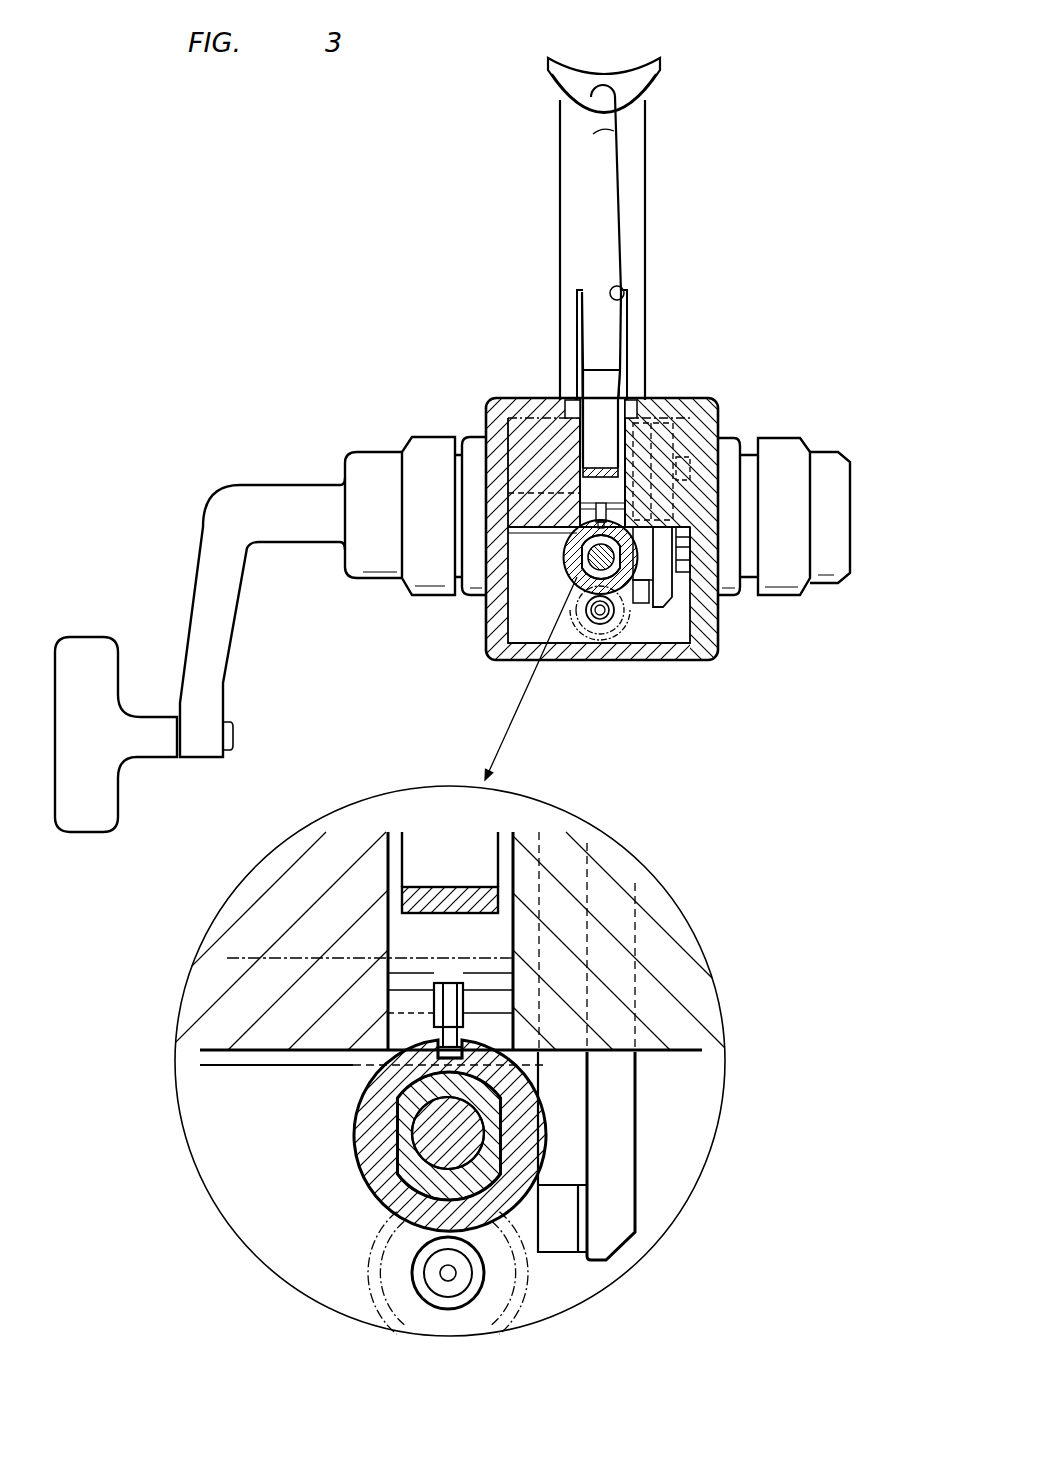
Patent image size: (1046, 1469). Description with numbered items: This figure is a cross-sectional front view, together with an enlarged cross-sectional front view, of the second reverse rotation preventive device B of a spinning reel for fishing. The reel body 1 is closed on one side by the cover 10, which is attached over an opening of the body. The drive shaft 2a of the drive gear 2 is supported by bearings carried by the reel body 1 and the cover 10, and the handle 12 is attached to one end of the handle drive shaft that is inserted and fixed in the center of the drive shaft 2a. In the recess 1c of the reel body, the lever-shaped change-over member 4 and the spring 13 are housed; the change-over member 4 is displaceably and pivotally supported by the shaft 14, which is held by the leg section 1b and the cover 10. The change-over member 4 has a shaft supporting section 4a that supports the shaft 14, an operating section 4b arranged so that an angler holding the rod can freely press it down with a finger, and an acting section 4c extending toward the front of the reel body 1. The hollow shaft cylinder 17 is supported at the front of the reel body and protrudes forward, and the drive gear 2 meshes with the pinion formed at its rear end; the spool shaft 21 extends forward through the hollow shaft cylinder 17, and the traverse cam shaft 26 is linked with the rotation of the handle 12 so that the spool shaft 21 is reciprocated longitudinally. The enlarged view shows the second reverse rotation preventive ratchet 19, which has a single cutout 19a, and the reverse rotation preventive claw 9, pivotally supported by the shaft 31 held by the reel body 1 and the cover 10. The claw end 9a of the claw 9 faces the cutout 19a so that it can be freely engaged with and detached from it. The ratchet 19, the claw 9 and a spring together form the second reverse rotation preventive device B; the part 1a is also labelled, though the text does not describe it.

The reel body 1 is at (489, 397).
The cup-shaped head of lever 1a is at (656, 66).
The leg section 1b is at (646, 153).
The recess 1c is at (628, 280).
The drive gear 2 is at (670, 609).
The drive shaft 2a is at (205, 1065).
The lever-shaped change-over member 4 is at (628, 193).
The shaft supporting section 4a is at (592, 388).
The operating section 4b is at (607, 126).
The acting section 4c is at (600, 470).
The reverse rotation preventive claw 9 is at (447, 975).
The claw end 9a is at (438, 1050).
The cover 10 is at (720, 396).
The handle 12 is at (190, 600).
The spring 13 is at (600, 367).
The shaft 14 is at (568, 407).
The hollow shaft cylinder 17 is at (500, 1105).
The second reverse rotation preventive ratchet 19 is at (558, 573).
The cutout 19a is at (430, 1040).
The spool shaft 21 is at (440, 1172).
The traverse cam shaft 26 is at (440, 1270).
The shaft 31 is at (497, 1003).
The second reverse rotation preventive device B is at (554, 549).